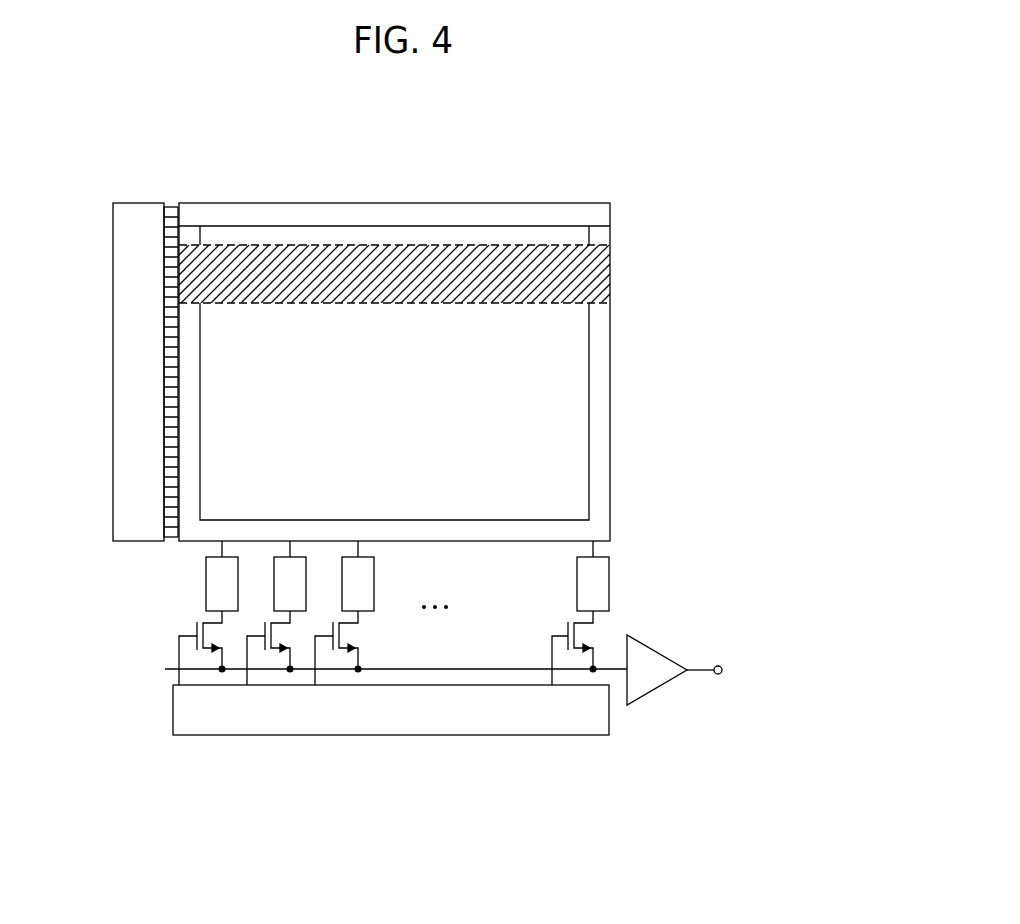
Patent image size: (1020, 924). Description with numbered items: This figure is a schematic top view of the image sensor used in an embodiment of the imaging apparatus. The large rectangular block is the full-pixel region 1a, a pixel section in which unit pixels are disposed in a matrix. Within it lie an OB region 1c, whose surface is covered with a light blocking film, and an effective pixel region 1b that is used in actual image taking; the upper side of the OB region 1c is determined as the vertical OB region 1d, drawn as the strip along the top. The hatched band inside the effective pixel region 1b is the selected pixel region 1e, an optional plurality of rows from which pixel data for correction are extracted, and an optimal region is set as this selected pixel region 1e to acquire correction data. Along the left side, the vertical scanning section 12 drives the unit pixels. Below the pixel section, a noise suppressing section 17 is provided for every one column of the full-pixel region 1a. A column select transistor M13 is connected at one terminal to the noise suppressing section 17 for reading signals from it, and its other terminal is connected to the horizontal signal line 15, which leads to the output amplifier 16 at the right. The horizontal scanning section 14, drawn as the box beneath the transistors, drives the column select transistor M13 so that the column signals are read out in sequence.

The full-pixel region 1a is at (297, 203).
The effective pixel region 1b is at (590, 460).
The OB region 1c is at (600, 380).
The vertical OB region 1d is at (587, 213).
The selected pixel region 1e is at (598, 275).
The vertical scanning section 12 is at (112, 235).
The column select transistor M13 is at (195, 628).
The horizontal scanning section 14 is at (436, 735).
The horizontal signal line 15 is at (165, 669).
The output amplifier 16 is at (648, 696).
The noise suppressing section 17 is at (320, 680).